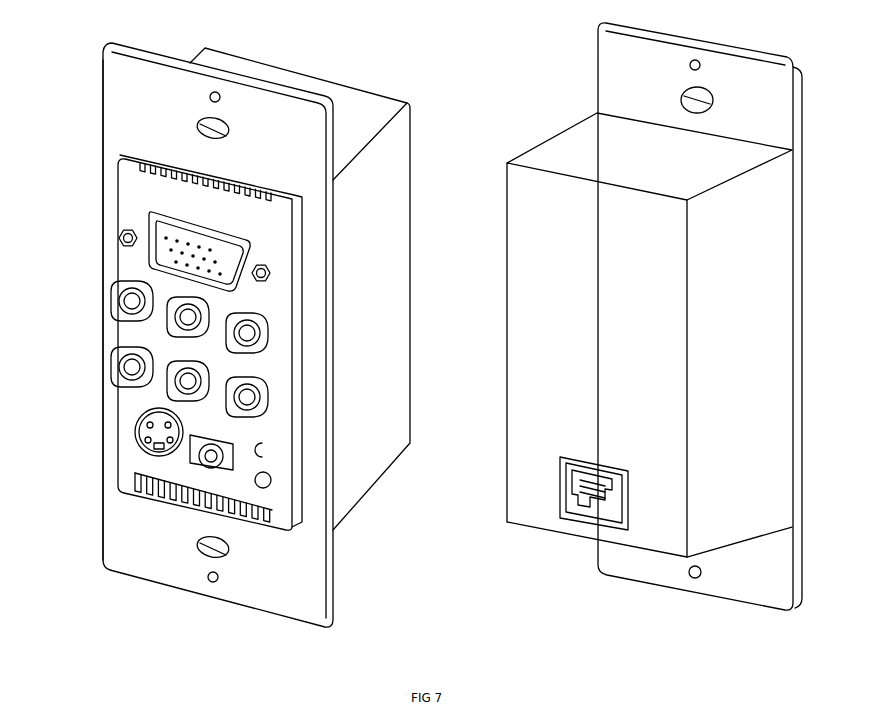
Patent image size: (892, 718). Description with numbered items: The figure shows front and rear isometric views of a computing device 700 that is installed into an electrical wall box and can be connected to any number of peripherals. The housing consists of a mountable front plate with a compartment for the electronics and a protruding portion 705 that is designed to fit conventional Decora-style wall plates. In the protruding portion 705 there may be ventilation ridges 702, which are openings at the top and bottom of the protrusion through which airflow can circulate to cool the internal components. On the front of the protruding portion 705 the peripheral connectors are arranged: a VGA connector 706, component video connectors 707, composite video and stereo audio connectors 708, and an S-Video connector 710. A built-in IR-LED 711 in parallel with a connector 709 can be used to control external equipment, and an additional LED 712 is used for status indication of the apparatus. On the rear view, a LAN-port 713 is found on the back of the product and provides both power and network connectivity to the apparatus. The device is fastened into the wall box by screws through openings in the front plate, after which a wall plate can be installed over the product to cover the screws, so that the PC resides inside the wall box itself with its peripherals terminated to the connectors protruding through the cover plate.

The computing device 700 is at (88, 43).
The ventilation ridges 702 is at (264, 354).
The protruding portion 705 is at (125, 172).
The VGA connector 706 is at (150, 222).
The component video connector 707 is at (250, 325).
The composite video and stereo audio connectors 708 is at (247, 393).
The connector 709 is at (122, 376).
The S-Video connector 710 is at (138, 425).
The IR-LED 711 is at (257, 453).
The LED 712 is at (263, 480).
The LAN-port 713 is at (580, 478).